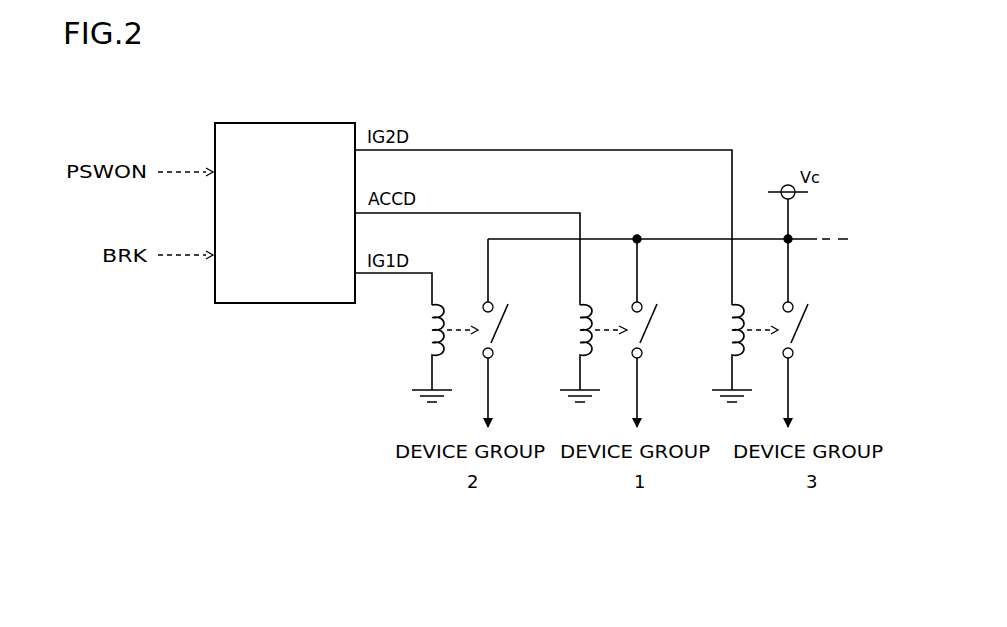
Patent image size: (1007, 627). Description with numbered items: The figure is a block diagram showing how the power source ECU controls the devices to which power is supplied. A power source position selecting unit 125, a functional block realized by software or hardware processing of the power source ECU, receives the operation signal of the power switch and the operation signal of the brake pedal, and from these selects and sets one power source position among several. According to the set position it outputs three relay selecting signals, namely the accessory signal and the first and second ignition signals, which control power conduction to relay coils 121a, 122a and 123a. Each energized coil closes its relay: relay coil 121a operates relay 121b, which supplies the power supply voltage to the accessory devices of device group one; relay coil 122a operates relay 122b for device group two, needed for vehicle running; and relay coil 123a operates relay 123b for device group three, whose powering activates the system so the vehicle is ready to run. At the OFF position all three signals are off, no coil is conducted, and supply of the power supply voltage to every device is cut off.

The power source position selecting unit 125 is at (313, 122).
The relay coil 121a is at (568, 325).
The relay 121b is at (657, 328).
The relay coil 122a is at (423, 327).
The relay 122b is at (507, 328).
The relay coil 123a is at (720, 325).
The relay 123b is at (803, 338).